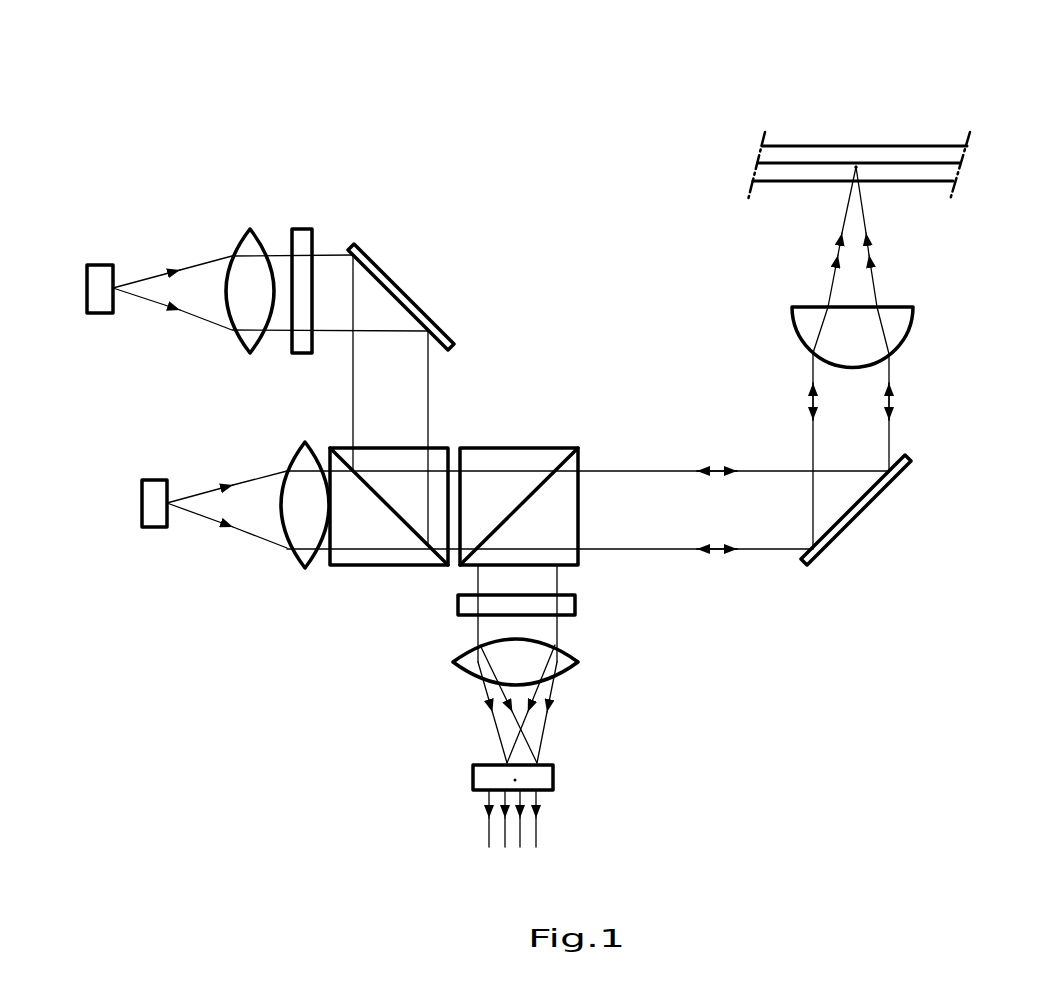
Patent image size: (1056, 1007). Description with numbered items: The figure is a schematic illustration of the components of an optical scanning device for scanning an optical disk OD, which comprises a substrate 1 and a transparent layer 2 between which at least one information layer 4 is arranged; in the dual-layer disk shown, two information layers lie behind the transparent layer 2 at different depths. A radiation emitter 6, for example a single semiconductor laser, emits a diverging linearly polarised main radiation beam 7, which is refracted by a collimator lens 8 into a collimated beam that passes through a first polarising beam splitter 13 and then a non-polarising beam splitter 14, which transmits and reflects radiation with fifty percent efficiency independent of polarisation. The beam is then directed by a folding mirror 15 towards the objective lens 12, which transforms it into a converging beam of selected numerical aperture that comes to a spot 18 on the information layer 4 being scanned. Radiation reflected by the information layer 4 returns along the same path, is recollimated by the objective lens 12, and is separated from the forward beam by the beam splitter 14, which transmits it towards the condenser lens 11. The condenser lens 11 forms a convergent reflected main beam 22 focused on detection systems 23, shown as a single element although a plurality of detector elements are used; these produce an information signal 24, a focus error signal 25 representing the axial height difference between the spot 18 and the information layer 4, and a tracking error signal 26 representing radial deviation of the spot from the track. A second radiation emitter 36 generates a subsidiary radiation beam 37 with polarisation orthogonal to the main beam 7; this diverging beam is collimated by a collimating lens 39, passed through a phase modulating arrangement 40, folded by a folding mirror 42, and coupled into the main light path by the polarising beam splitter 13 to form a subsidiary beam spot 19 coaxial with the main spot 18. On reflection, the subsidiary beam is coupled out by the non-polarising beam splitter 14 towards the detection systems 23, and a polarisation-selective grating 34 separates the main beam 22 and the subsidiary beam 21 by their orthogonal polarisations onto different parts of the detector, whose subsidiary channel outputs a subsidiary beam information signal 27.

The optical disk OD is at (763, 133).
The substrate 1 is at (943, 155).
The transparent layer 2 is at (778, 173).
The information layer 4 is at (807, 170).
The spot 18 is at (856, 167).
The subsidiary beam spot 19 is at (856, 167).
The radiation emitter 6 is at (152, 530).
The main radiation beam 7 is at (234, 480).
The collimator lens 8 is at (291, 440).
The condenser lens 11 is at (454, 656).
The objective lens 12 is at (914, 330).
The first polarising beam splitter 13 is at (441, 447).
The non-polarising beam splitter 14 is at (523, 447).
The folding mirror 15 is at (912, 466).
The subsidiary beam 21 is at (550, 714).
The convergent reflected main beam 22 is at (486, 714).
The detection systems 23 is at (472, 778).
The information signal 24 is at (488, 835).
The focus error signal 25 is at (505, 842).
The tracking error signal 26 is at (520, 842).
The subsidiary beam information signal 27 is at (538, 835).
The polarisation-selective grating 34 is at (576, 605).
The second radiation emitter 36 is at (98, 318).
The subsidiary radiation beam 37 is at (181, 265).
The collimating lens 39 is at (245, 228).
The phase modulating arrangement 40 is at (302, 228).
The folding mirror 42 is at (432, 312).